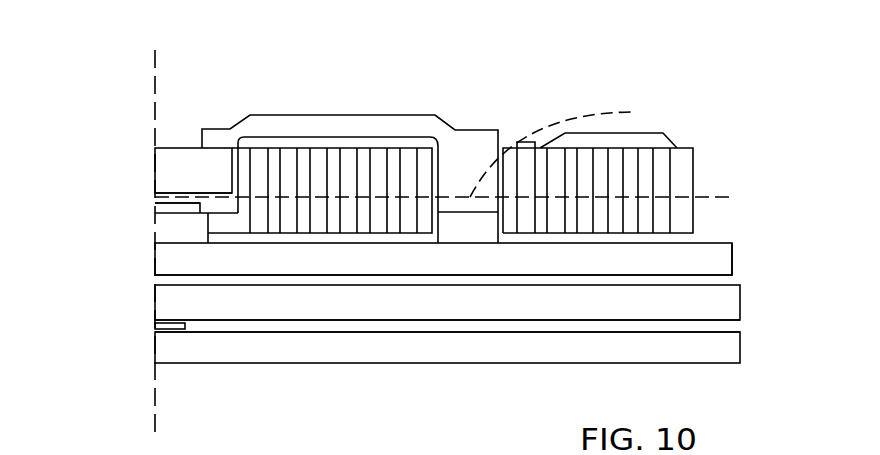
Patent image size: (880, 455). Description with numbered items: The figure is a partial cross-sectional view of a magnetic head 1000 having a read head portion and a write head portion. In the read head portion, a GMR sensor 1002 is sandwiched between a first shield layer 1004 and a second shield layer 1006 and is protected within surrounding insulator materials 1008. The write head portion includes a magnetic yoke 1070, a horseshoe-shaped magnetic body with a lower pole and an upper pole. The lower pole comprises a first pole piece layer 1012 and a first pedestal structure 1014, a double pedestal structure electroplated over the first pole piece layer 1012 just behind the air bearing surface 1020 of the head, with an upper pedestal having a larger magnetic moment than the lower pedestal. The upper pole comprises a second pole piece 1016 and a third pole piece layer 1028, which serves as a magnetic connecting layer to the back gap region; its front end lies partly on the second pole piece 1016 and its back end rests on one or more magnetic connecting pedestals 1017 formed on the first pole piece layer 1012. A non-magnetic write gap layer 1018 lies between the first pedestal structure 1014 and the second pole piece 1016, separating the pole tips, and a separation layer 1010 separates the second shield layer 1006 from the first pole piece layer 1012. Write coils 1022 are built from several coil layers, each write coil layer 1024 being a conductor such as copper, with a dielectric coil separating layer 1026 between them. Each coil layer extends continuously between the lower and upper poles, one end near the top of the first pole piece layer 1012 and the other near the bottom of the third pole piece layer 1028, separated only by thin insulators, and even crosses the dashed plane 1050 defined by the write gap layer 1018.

The magnetic head 1000 is at (487, 403).
The GMR sensor 1002 is at (170, 330).
The first shield layer 1004 is at (740, 345).
The second shield layer 1006 is at (740, 297).
The insulator materials 1008 is at (735, 325).
The separation layer 1010 is at (727, 282).
The first pole piece layer 1012 is at (182, 260).
The first pedestal structure 1014 is at (146, 203).
The second pole piece 1016 is at (183, 162).
The write gap layer 1018 is at (153, 195).
The air bearing surface 1020 is at (155, 80).
The write coils 1022 is at (371, 156).
The write coil layer 1024 is at (262, 157).
The coil separating layer 1026 is at (273, 157).
The third pole piece layer 1028 is at (438, 123).
The plane 1050 is at (393, 203).
The magnetic connecting pedestals 1017 is at (576, 149).
The magnetic yoke 1070 is at (366, 60).